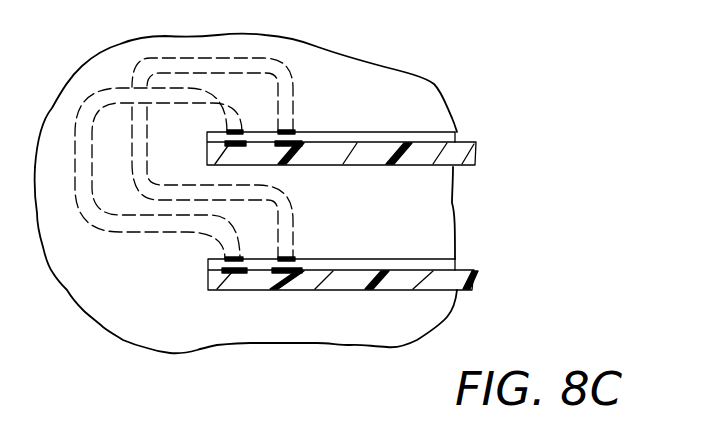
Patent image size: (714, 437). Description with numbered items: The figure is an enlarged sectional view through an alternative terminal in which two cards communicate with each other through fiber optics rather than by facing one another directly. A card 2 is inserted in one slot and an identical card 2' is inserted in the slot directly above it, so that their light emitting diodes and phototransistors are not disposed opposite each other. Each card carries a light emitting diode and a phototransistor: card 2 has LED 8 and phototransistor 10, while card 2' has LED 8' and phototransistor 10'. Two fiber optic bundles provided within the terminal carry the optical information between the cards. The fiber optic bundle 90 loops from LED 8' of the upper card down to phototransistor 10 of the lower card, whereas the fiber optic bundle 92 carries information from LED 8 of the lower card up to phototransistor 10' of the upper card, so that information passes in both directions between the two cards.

The card 2 is at (361, 276).
The card 2' is at (366, 155).
The light emitting diode 8 is at (216, 296).
The light emitting diode 8' is at (207, 150).
The phototransistor 10 is at (311, 297).
The phototransistor 10' is at (320, 168).
The fiber optic bundle 90 is at (157, 224).
The fiber optic bundle 92 is at (292, 236).